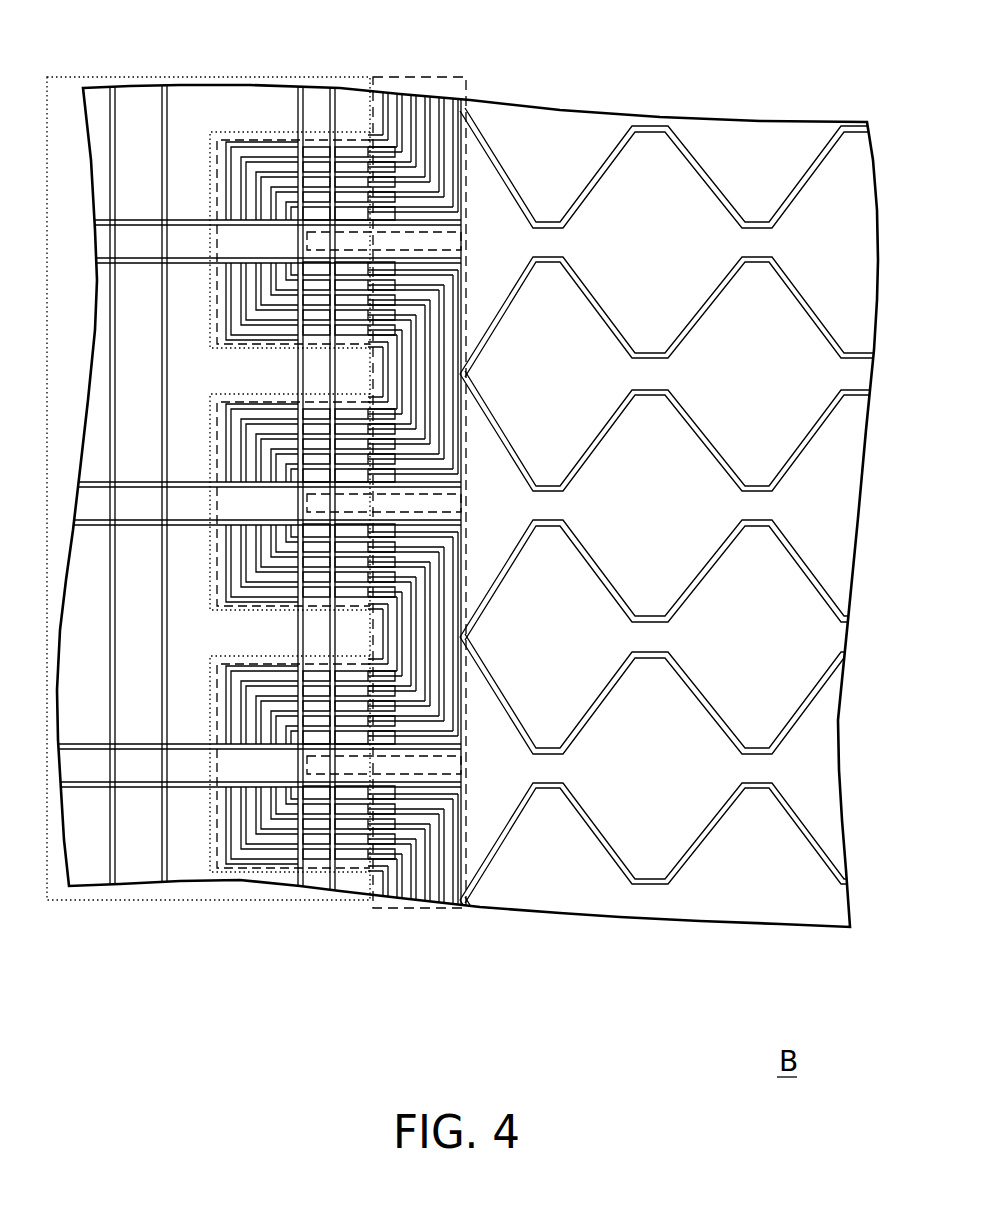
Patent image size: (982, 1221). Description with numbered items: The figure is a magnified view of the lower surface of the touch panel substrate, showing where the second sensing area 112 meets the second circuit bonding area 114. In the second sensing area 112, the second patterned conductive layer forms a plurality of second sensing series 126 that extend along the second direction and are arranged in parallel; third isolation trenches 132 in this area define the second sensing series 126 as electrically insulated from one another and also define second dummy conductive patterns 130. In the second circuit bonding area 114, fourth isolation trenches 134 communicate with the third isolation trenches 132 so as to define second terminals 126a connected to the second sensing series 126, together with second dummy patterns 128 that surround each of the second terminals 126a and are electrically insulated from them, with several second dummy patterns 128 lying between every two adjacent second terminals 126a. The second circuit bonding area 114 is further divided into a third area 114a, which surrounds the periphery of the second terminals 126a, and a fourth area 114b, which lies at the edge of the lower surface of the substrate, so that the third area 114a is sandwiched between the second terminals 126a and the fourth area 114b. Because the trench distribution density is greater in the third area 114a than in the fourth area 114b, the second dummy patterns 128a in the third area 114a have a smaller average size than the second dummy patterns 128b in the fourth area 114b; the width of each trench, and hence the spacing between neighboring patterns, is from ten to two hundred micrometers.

The second sensing area 112 is at (466, 60).
The second circuit bonding area 114 is at (466, 60).
The third area 114a is at (468, 86).
The fourth area 114b is at (50, 77).
The second sensing series 126 is at (630, 732).
The second terminals 126a is at (375, 767).
The second dummy patterns 128 is at (408, 997).
The second dummy patterns in the third area 128a is at (347, 793).
The second dummy patterns in the fourth area 128b is at (205, 803).
The second dummy conductive patterns 130 is at (740, 610).
The third isolation trenches 132 is at (547, 752).
The fourth isolation trenches 134 is at (410, 785).